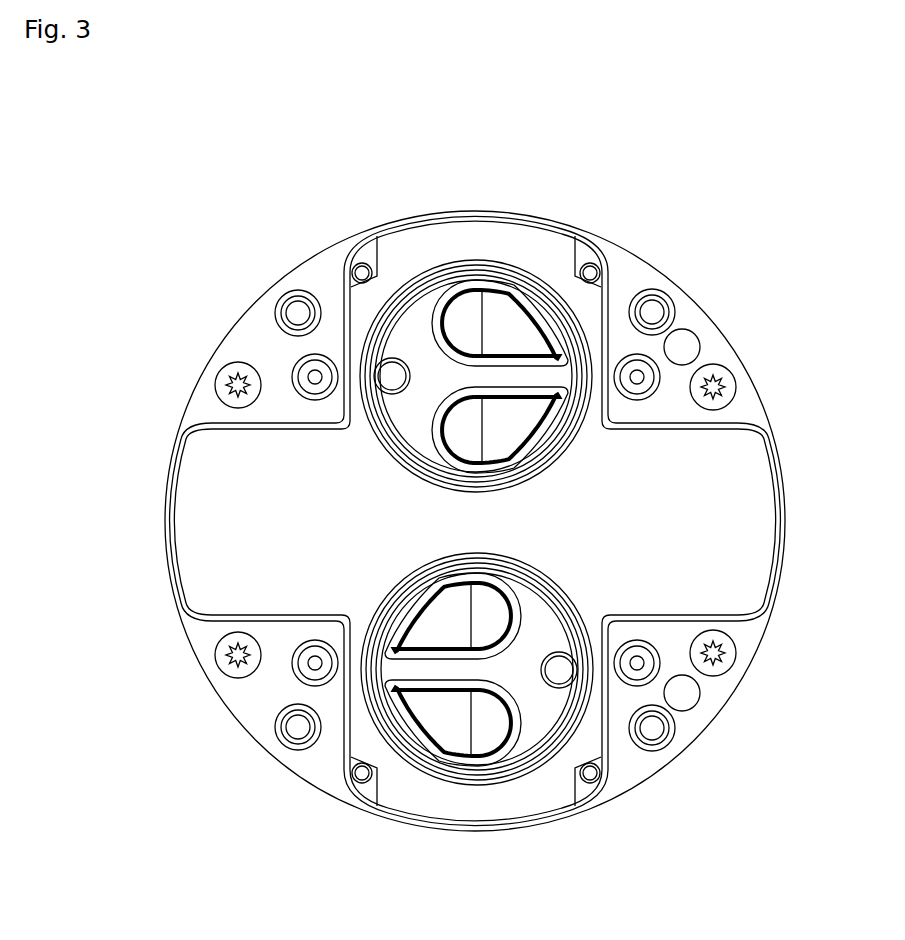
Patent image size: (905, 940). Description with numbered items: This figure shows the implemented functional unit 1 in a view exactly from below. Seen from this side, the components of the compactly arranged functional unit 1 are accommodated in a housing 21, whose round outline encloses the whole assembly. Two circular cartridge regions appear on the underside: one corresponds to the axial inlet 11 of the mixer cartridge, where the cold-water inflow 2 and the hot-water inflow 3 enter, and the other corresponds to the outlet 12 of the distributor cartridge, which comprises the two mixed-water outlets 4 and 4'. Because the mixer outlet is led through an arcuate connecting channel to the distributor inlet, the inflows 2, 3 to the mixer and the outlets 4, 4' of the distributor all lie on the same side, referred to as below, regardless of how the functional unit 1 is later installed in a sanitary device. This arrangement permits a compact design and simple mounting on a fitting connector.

The functional unit 1 is at (316, 178).
The cold-water inflow 2 is at (452, 716).
The hot-water inflow 3 is at (440, 628).
The mixed-water outlet 4 is at (524, 433).
The mixed-water outlet 4' is at (500, 242).
The axial inlet 11 is at (512, 667).
The outlet 12 is at (437, 378).
The housing 21 is at (715, 328).